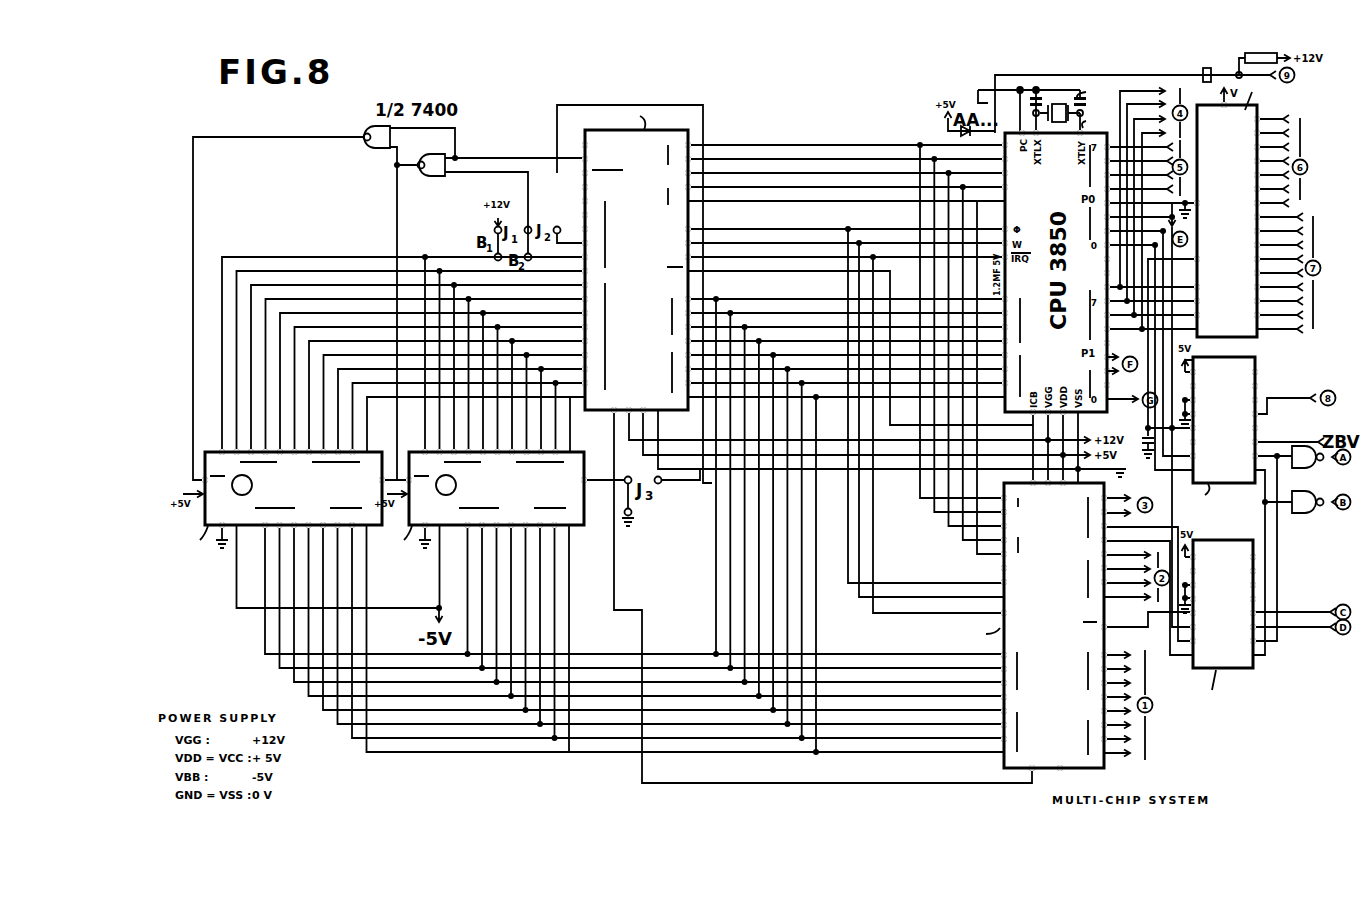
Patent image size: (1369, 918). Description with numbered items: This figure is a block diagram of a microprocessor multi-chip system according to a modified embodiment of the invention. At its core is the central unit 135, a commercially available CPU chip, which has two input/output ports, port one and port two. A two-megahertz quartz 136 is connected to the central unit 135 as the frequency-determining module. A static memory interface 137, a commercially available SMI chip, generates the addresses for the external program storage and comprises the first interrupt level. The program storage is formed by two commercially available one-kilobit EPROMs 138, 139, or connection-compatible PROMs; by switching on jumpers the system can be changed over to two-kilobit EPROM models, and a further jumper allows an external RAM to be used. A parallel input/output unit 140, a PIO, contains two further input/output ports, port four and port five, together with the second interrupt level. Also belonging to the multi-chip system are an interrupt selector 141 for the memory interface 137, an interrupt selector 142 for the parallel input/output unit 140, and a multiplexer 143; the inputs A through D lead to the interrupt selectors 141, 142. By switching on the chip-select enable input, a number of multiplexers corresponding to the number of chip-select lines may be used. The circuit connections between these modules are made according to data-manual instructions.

The central unit 135 is at (1087, 118).
The quartz 136 is at (1076, 93).
The static memory interface 137 is at (636, 259).
The EPROM 138 is at (280, 503).
The EPROM 139 is at (484, 503).
The parallel input/output unit 140 is at (1028, 625).
The interrupt selector 141 is at (1227, 435).
The interrupt selector 142 is at (1223, 622).
The multiplexer 143 is at (1242, 195).